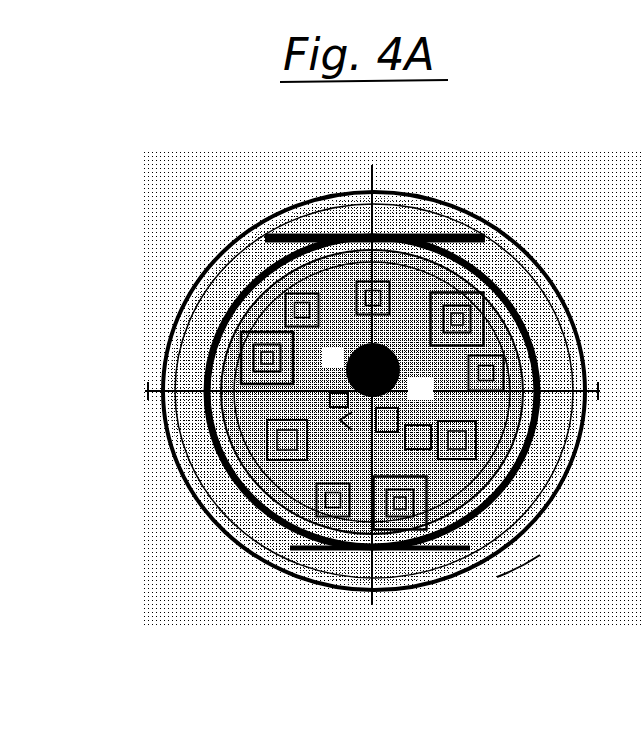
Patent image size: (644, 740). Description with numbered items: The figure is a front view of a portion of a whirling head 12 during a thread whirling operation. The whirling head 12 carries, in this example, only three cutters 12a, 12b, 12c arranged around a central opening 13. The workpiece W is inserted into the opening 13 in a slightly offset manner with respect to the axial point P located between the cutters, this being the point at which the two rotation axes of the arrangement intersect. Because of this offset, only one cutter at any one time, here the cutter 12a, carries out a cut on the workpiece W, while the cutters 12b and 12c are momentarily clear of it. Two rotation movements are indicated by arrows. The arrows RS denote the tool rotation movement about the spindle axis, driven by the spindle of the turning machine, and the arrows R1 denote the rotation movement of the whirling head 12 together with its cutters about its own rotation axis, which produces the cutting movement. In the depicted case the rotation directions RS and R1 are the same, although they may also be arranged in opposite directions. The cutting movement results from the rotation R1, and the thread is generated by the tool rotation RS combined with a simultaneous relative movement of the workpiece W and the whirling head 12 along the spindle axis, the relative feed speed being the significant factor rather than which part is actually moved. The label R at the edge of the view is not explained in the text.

The whirling head 12 is at (500, 331).
The cutter 12a is at (398, 321).
The cutter 12b is at (418, 438).
The cutter 12c is at (345, 402).
The opening 13 is at (384, 430).
The workpiece W is at (350, 351).
The axial point P is at (349, 394).
The tool rotation movement RS is at (352, 425).
The radius R is at (621, 445).
The rotation movement R1 is at (497, 577).